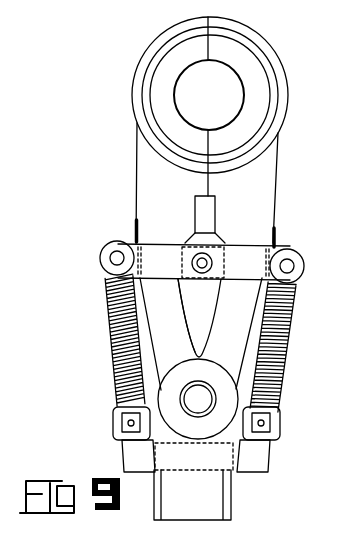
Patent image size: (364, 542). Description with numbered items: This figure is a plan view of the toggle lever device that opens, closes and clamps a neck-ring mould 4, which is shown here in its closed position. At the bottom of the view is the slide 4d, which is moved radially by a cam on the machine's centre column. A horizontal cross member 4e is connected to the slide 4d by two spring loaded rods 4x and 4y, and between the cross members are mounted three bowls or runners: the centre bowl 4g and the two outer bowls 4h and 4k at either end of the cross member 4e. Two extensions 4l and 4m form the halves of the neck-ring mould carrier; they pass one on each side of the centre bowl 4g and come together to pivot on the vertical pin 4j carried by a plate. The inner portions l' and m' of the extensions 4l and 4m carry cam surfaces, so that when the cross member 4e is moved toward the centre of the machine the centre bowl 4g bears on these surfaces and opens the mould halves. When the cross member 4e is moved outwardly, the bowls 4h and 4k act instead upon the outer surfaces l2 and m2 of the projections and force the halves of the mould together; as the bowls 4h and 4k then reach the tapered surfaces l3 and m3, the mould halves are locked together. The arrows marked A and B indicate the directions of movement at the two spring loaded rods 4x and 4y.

The neck-ring mould 4 is at (260, 88).
The extension 4l is at (145, 172).
The extension 4m is at (270, 177).
The tapered surface l3 is at (132, 230).
The tapered surface m3 is at (276, 236).
The horizontal cross member 4e is at (158, 252).
The centre bowl 4g is at (220, 248).
The bowl 4h is at (100, 257).
The bowl 4k is at (305, 266).
The inner portion m' is at (210, 276).
The inner portion l' is at (176, 315).
The outer surface l2 is at (150, 343).
The outer surface m2 is at (250, 342).
The vertical pin 4j is at (198, 399).
The spring loaded rod 4x is at (120, 375).
The spring loaded rod 4y is at (288, 305).
The slide 4d is at (213, 502).
The direction arrow A is at (64, 288).
The direction arrow B is at (292, 307).